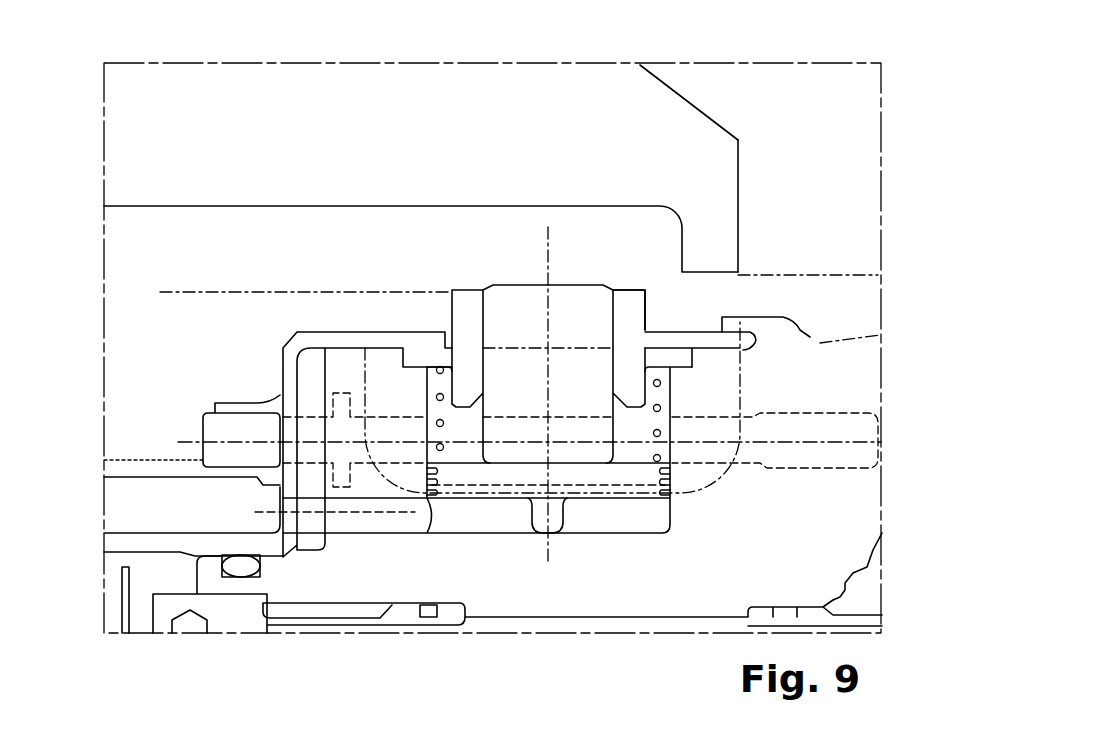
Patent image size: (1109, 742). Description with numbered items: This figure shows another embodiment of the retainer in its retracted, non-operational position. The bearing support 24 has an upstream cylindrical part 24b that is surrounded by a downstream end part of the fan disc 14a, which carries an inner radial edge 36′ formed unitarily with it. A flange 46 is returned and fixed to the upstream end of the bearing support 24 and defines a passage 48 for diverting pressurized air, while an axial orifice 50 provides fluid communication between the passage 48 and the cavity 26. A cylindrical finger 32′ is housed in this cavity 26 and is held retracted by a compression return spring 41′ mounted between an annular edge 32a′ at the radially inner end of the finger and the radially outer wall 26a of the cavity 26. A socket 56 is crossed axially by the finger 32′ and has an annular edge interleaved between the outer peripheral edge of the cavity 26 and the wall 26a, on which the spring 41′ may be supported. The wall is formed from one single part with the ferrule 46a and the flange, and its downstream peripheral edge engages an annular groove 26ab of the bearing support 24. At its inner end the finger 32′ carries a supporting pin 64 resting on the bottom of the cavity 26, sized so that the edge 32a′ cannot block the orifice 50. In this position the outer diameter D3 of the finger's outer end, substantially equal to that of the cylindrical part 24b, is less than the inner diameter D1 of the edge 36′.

The fan disc 14a is at (586, 98).
The inner radial edge 36′ is at (712, 198).
The inner diameter D1 is at (862, 272).
The outer diameter D3 is at (243, 290).
The cylindrical finger 32′ is at (527, 303).
The socket 56 is at (631, 295).
The radially outer wall 26a is at (703, 326).
The annular groove 26ab is at (760, 342).
The cavity 26 is at (625, 515).
The supporting pin 64 is at (565, 513).
The return spring 41′ is at (660, 433).
The annular edge 32a′ is at (672, 517).
The axial orifice 50 is at (355, 535).
The flange 46 is at (141, 470).
The passage 48 is at (178, 509).
The ferrule 46a is at (115, 542).
The bearing support 24 is at (606, 599).
The upstream cylindrical part 24b is at (842, 523).